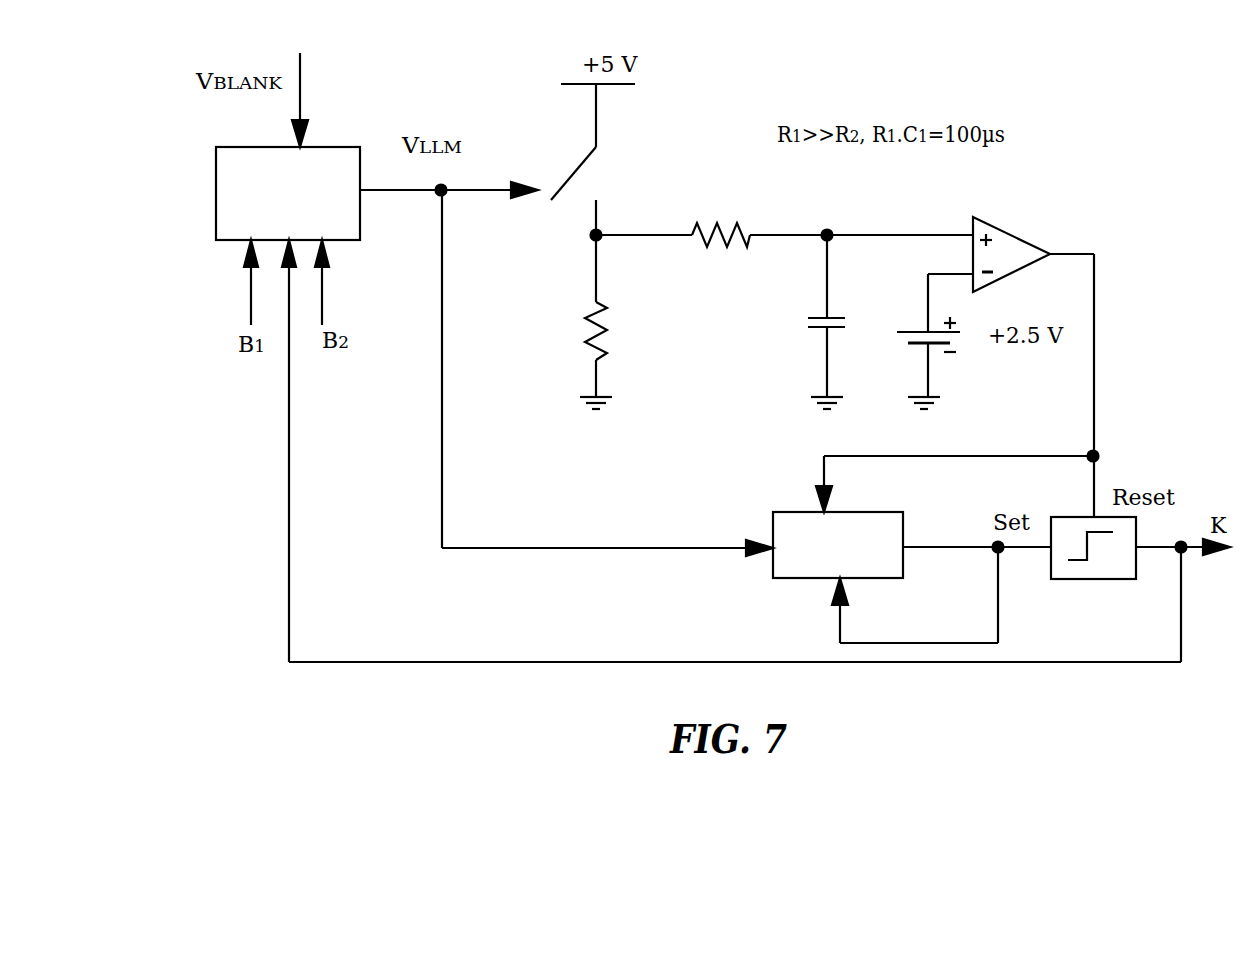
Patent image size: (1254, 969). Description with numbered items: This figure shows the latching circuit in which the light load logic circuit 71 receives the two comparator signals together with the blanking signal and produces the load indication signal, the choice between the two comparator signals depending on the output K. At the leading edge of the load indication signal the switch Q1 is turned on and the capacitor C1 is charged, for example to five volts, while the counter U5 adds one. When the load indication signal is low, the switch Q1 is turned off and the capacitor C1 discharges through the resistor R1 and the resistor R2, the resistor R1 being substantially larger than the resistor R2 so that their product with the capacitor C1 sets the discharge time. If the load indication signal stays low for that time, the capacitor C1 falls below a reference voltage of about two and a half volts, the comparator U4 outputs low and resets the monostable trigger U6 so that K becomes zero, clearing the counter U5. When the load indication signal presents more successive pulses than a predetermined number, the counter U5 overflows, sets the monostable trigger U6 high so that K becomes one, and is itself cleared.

The light load logic circuit 71 is at (274, 209).
The switch Q1 is at (600, 191).
The resistor R1 is at (615, 331).
The resistor R2 is at (721, 218).
The capacitor C1 is at (812, 324).
The comparator U4 is at (1011, 247).
The counter U5 is at (838, 545).
The monostable trigger U6 is at (1093, 565).